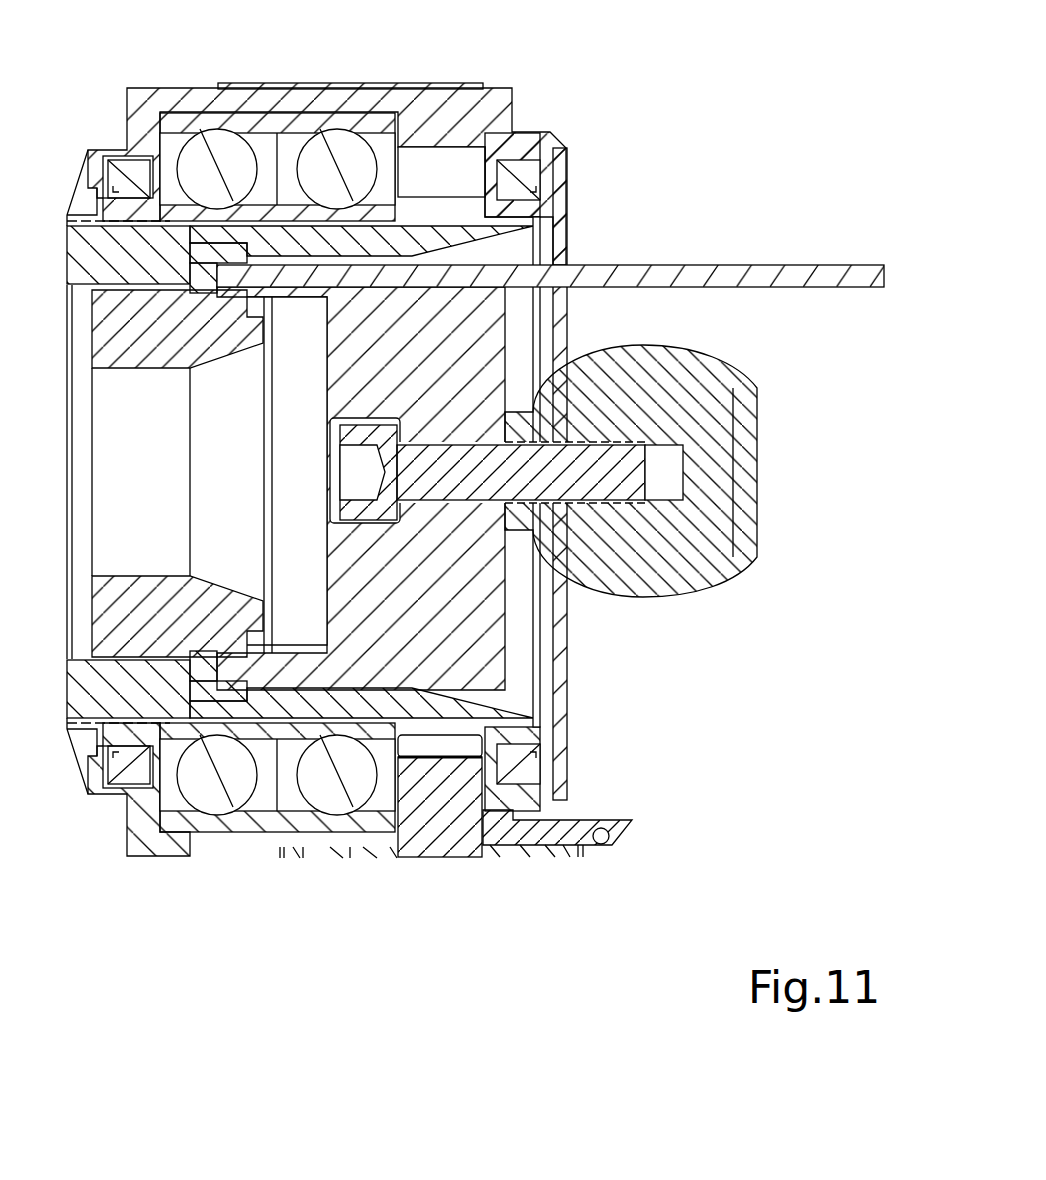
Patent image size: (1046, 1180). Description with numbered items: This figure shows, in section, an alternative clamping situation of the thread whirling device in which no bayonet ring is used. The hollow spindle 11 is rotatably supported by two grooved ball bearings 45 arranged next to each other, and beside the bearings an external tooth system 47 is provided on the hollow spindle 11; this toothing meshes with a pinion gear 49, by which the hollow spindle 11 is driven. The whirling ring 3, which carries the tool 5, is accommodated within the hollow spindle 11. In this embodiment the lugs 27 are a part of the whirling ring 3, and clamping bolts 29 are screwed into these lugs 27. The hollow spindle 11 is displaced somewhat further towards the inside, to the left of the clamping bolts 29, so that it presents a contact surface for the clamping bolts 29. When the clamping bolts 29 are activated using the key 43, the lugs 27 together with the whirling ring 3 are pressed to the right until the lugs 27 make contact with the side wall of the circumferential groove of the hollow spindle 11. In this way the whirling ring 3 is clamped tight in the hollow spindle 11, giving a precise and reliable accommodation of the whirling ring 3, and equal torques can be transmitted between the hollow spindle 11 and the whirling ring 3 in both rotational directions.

The whirling ring 3 is at (102, 357).
The tool 5 is at (497, 641).
The hollow spindle 11 is at (90, 262).
The lugs 27 is at (191, 245).
The clamping bolts 29 is at (212, 262).
The key 43 is at (703, 276).
The grooved ball bearings 45 is at (330, 796).
The external tooth system 47 is at (480, 200).
The pinion gear 49 is at (440, 832).